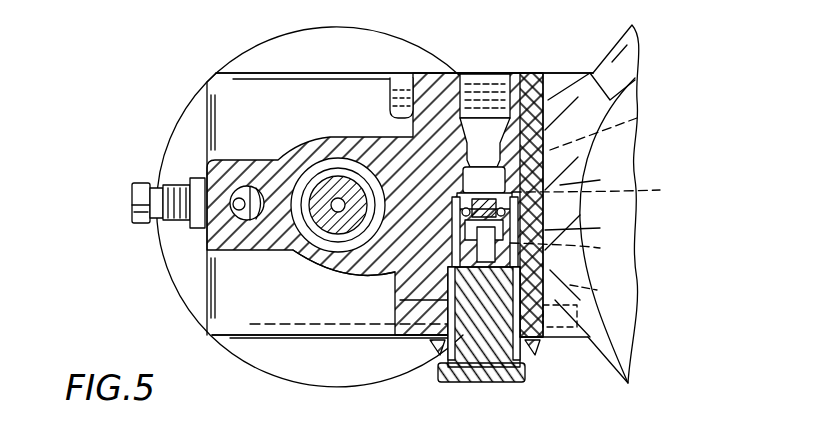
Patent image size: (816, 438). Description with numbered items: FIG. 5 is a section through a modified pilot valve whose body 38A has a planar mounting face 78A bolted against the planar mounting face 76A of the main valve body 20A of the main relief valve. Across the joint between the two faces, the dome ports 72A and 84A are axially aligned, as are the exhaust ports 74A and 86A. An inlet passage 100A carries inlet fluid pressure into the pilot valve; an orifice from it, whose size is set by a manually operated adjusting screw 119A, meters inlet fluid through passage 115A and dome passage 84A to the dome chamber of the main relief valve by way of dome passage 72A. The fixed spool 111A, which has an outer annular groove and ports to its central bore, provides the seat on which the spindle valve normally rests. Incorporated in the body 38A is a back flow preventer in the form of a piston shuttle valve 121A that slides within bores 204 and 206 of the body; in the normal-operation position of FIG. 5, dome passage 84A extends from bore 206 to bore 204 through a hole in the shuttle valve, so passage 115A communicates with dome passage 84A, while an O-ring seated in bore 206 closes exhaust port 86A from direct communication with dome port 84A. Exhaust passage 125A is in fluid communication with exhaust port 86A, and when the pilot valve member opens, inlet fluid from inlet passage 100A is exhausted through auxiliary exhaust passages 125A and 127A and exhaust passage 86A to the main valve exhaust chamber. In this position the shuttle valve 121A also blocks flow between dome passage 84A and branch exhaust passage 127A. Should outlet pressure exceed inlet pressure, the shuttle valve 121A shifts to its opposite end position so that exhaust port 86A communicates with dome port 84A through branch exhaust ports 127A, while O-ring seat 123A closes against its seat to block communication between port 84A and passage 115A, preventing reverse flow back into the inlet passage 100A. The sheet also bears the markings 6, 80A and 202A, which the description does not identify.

The brake assembly 6 is at (404, 36).
The main valve body 20A is at (620, 70).
The pilot valve body 38A is at (313, 268).
The dome port 72A is at (660, 190).
The exhaust port 74A is at (600, 248).
The planar mounting face 76A is at (600, 180).
The planar mounting face 78A is at (548, 117).
The bolt hole 80A is at (438, 88).
The dome passage 84A is at (637, 118).
The exhaust port 86A is at (597, 290).
The inlet passage 100A is at (200, 239).
The fixed spool 111A is at (295, 188).
The passage 115A is at (333, 135).
The adjusting screw 119A is at (158, 187).
The piston shuttle valve 121A is at (405, 137).
The O-ring seat 123A is at (290, 277).
The exhaust passage 125A is at (316, 266).
The branch exhaust passage 127A is at (600, 228).
The cylinder 202A is at (492, 383).
The bore 204 is at (472, 155).
The bore 206 is at (453, 206).